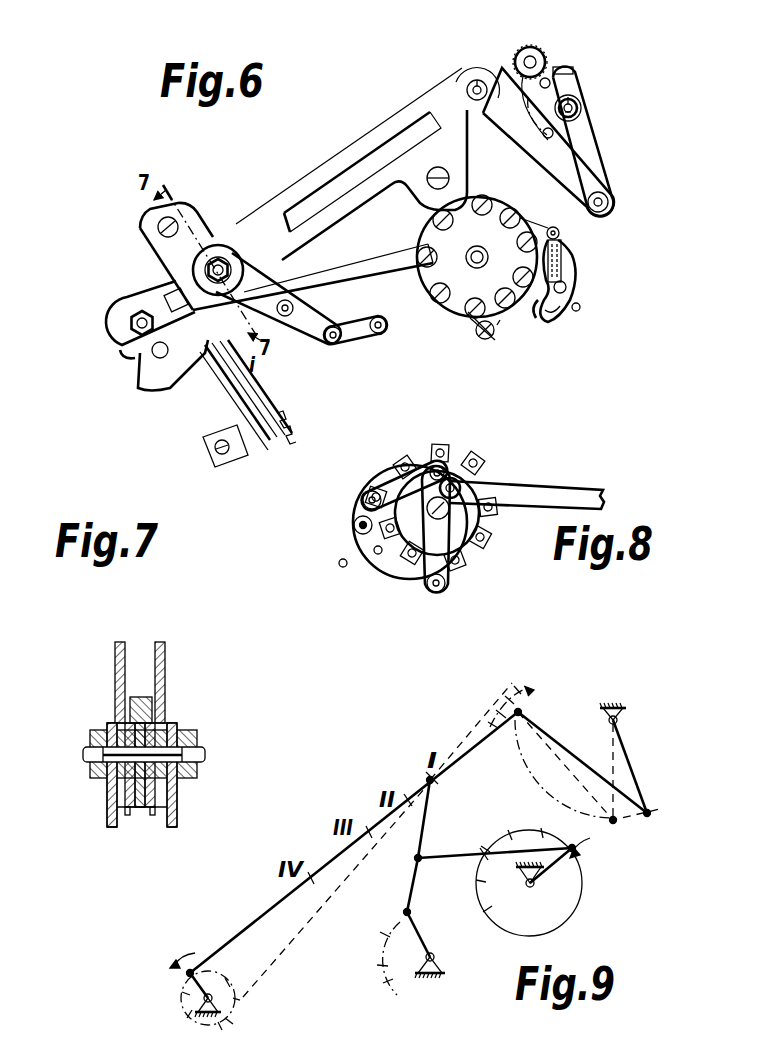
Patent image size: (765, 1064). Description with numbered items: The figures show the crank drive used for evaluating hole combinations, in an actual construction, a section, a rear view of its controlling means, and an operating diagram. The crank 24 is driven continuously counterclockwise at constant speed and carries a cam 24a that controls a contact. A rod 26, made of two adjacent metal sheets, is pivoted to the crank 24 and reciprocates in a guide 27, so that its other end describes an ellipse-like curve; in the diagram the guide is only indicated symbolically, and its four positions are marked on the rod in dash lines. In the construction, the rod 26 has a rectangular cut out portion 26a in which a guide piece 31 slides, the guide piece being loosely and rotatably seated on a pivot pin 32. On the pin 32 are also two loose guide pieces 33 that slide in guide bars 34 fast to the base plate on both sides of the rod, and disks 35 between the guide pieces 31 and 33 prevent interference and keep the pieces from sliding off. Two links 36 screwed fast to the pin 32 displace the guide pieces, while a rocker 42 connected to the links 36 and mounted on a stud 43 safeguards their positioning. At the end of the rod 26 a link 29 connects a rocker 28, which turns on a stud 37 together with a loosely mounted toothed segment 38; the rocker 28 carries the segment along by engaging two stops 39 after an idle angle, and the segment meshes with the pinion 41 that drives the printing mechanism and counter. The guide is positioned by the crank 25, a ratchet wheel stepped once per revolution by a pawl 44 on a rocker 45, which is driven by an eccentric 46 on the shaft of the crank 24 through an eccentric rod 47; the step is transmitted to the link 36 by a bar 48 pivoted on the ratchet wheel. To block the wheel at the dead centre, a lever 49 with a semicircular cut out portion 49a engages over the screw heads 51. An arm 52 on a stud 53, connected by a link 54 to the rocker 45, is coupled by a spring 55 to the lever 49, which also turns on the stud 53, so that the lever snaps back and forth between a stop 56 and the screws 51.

In FIG. 6, the crank 24 is at (150, 372).
In FIG. 9, the crank 24 is at (197, 985).
In FIG. 6, the cam 24a is at (207, 348).
In FIG. 6, the crank 25 is at (457, 297).
In FIG. 9, the crank 25 is at (544, 868).
In FIG. 6, the rod 26 is at (150, 300).
In FIG. 7, the rod 26 is at (157, 797).
In FIG. 9, the rod 26 is at (277, 903).
In FIG. 6, the rectangular cut out portion 26a is at (458, 108).
In FIG. 9, the guide 27 is at (430, 780).
In FIG. 6, the rocker 28 is at (580, 153).
In FIG. 9, the rocker 28 is at (632, 775).
In FIG. 6, the link 29 is at (468, 66).
In FIG. 9, the link 29 is at (583, 760).
In FIG. 7, the guide piece 31 is at (115, 718).
In FIG. 6, the pivot pin 32 is at (221, 258).
In FIG. 7, the pivot pin 32 is at (98, 758).
In FIG. 7, the guide pieces 33 is at (112, 788).
In FIG. 6, the guide bars 34 is at (408, 120).
In FIG. 7, the guide bars 34 is at (159, 643).
In FIG. 6, the disks 35 is at (196, 268).
In FIG. 7, the disks 35 is at (118, 690).
In FIG. 6, the links 36 is at (313, 323).
In FIG. 7, the links 36 is at (168, 830).
In FIG. 9, the links 36 is at (410, 890).
In FIG. 6, the stud 37 is at (583, 108).
In FIG. 6, the toothed segment 38 is at (573, 69).
In FIG. 6, the stops 39 is at (528, 98).
In FIG. 6, the pinion 41 is at (535, 44).
In FIG. 6, the rocker 42 is at (362, 335).
In FIG. 9, the rocker 42 is at (422, 935).
In FIG. 6, the stud 43 is at (385, 335).
In FIG. 6, the pawl 44 is at (496, 327).
In FIG. 8, the pawl 44 is at (425, 570).
In FIG. 6, the rocker 45 is at (470, 318).
In FIG. 8, the rocker 45 is at (437, 542).
In FIG. 6, the eccentric 46 is at (130, 343).
In FIG. 6, the eccentric rod 47 is at (352, 268).
In FIG. 8, the eccentric rod 47 is at (557, 497).
In FIG. 6, the bar 48 is at (397, 267).
In FIG. 9, the bar 48 is at (443, 859).
In FIG. 6, the lever 49 is at (566, 308).
In FIG. 8, the lever 49 is at (378, 555).
In FIG. 6, the semicircular cut out portion 49a is at (558, 309).
In FIG. 6, the screw heads 51 is at (520, 307).
In FIG. 6, the arm 52 is at (559, 233).
In FIG. 8, the arm 52 is at (360, 512).
In FIG. 8, the stud 53 is at (354, 525).
In FIG. 8, the link 54 is at (398, 487).
In FIG. 6, the spring 55 is at (553, 266).
In FIG. 6, the stop 56 is at (580, 305).
In FIG. 8, the stop 56 is at (340, 560).